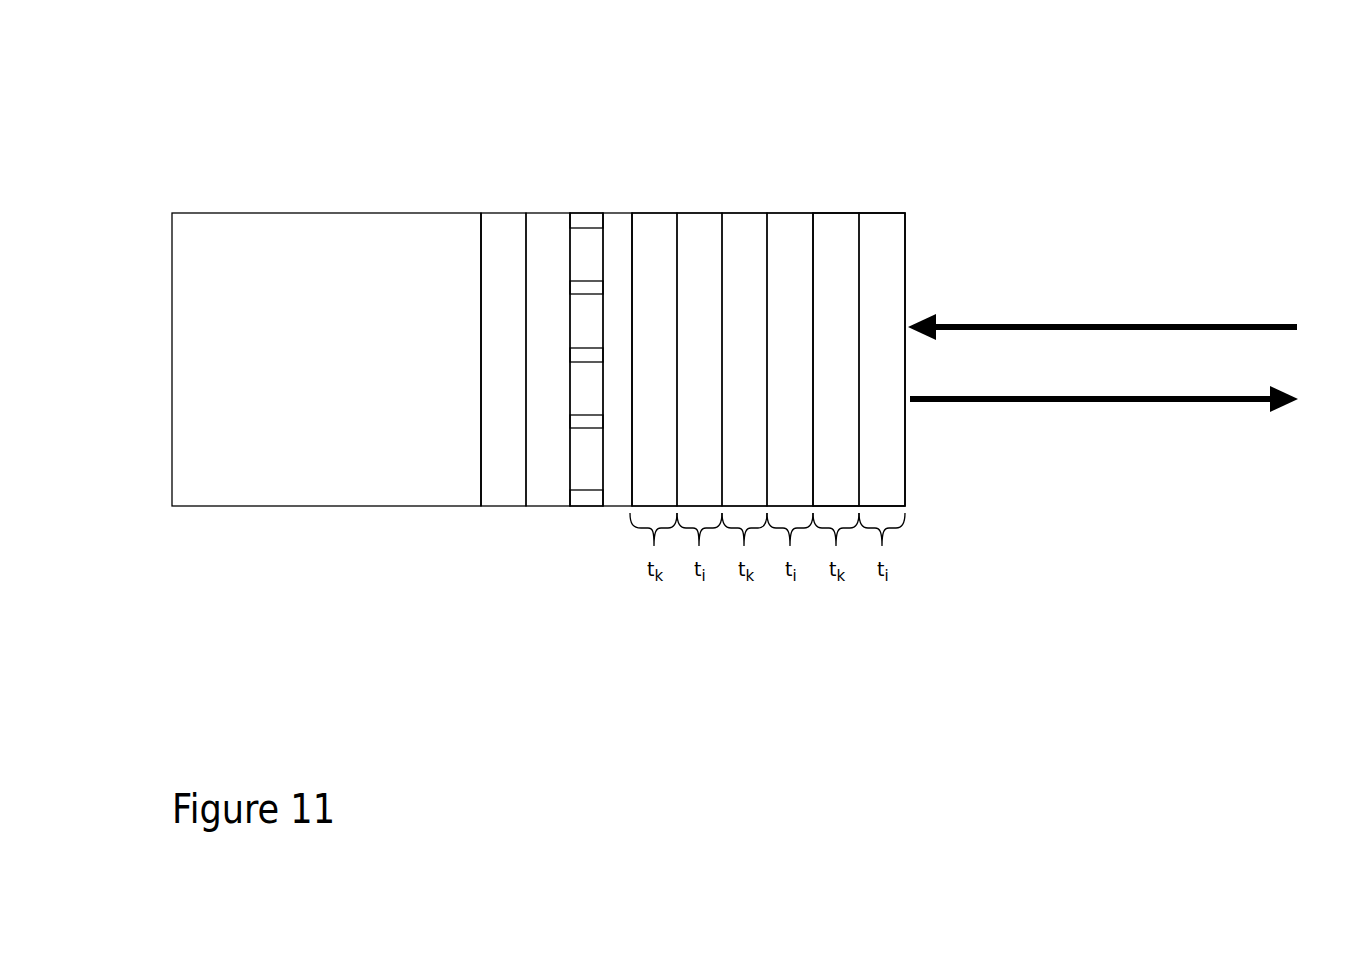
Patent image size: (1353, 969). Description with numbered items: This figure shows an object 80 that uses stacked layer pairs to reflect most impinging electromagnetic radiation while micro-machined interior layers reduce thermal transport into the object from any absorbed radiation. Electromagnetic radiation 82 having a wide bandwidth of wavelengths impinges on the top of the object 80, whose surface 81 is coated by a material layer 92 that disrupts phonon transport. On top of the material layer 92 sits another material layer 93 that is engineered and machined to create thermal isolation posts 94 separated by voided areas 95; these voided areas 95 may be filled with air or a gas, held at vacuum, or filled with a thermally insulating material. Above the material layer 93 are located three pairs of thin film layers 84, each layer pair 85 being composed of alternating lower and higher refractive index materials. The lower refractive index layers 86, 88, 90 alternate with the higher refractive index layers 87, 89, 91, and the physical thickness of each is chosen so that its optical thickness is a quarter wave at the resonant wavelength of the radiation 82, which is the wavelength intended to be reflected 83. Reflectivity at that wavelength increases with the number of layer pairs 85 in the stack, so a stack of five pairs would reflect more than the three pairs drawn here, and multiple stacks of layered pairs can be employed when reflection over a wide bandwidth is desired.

The object 80 is at (417, 232).
The surface 81 is at (474, 210).
The electromagnetic radiation 82 is at (1102, 311).
The reflected radiation 83 is at (1104, 417).
The pairs of thin film layers 84 is at (632, 212).
The layer pair 85 is at (813, 213).
The lower refractive index layer 86 is at (654, 359).
The higher refractive index layer 87 is at (699, 359).
The lower refractive index layer 88 is at (744, 359).
The higher refractive index layer 89 is at (790, 359).
The lower refractive index layer 90 is at (836, 359).
The higher refractive index layer 91 is at (882, 359).
The material layer 92 is at (506, 236).
The material layer 93 is at (547, 243).
The thermal isolation posts 94 is at (577, 503).
The voided areas 95 is at (593, 478).